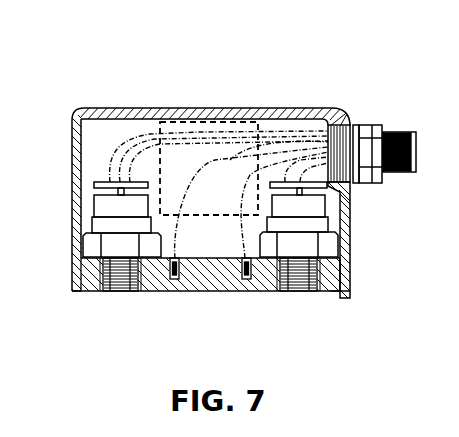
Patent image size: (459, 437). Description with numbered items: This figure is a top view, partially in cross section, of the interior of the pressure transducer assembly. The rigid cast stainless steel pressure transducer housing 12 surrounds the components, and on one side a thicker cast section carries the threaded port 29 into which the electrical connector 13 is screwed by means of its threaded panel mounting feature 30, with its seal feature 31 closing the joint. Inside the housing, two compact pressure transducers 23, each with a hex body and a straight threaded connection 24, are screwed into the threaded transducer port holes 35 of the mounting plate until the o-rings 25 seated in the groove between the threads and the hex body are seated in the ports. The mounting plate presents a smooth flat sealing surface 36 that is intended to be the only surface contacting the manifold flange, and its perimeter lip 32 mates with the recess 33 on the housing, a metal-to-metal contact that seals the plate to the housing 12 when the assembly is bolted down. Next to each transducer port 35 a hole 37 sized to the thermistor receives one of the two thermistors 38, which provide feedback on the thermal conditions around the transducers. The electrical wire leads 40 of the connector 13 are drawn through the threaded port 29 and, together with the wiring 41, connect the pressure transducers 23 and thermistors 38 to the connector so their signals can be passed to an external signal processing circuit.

The pressure transducer housing 12 is at (217, 108).
The electrical connector 13 is at (373, 127).
The pressure transducer 23 is at (82, 242).
The straight threaded connection 24 is at (98, 286).
The o-ring 25 is at (85, 292).
The threaded port 29 is at (348, 188).
The threaded panel mounting feature 30 is at (347, 125).
The seal feature 31 is at (350, 125).
The lip 32 is at (342, 278).
The recess 33 is at (347, 292).
The threaded transducer port hole 35 is at (120, 290).
The smooth flat sealing surface 36 is at (215, 290).
The hole 37 is at (160, 286).
The thermistor 38 is at (177, 280).
The electrical wire lead 40 is at (170, 134).
The wiring 41 is at (160, 170).